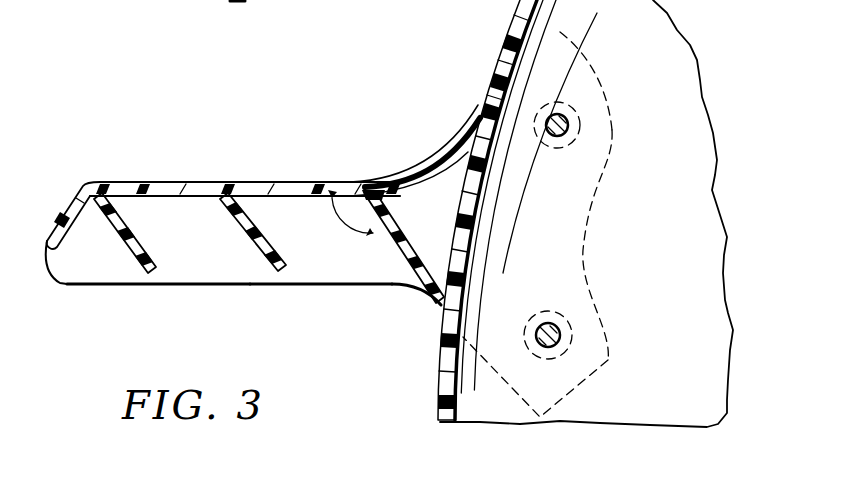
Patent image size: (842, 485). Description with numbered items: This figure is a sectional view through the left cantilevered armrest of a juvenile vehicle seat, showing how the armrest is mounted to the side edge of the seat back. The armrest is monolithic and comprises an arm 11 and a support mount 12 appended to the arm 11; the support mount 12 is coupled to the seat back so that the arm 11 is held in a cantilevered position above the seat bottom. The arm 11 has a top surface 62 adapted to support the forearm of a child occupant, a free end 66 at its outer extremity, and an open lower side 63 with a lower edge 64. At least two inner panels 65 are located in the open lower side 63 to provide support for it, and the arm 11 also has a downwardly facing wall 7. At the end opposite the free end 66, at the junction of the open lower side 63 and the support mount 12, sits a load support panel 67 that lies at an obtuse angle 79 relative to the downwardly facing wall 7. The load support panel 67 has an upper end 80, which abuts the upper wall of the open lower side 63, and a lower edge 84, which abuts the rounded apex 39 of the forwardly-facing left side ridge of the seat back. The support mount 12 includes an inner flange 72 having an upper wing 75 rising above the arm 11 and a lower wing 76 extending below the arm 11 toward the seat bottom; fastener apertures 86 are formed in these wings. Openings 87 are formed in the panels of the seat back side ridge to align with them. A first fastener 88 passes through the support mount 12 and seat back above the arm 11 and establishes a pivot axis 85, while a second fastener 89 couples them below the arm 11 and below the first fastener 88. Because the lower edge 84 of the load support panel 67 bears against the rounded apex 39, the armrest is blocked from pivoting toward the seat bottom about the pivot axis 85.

The downwardly facing wall 7 is at (292, 197).
The arm 11 is at (208, 182).
The support mount 12 is at (508, 32).
The rounded apex 39 is at (496, 0).
The top surface 62 is at (267, 182).
The open lower side 63 is at (214, 265).
The lower edge 64 is at (318, 287).
The inner panels 65 is at (165, 252).
The free end 66 is at (54, 213).
The load support panel 67 is at (408, 288).
The inner flange 72 is at (580, 202).
The upper wing 75 is at (580, 34).
The lower wing 76 is at (610, 342).
The obtuse angle 79 is at (357, 231).
The upper end 80 is at (372, 191).
The lower edge 84 is at (437, 297).
The pivot axis 85 is at (567, 148).
The fastener apertures 86 is at (582, 122).
The openings 87 is at (597, 295).
The first fastener 88 is at (588, 97).
The second fastener 89 is at (541, 312).